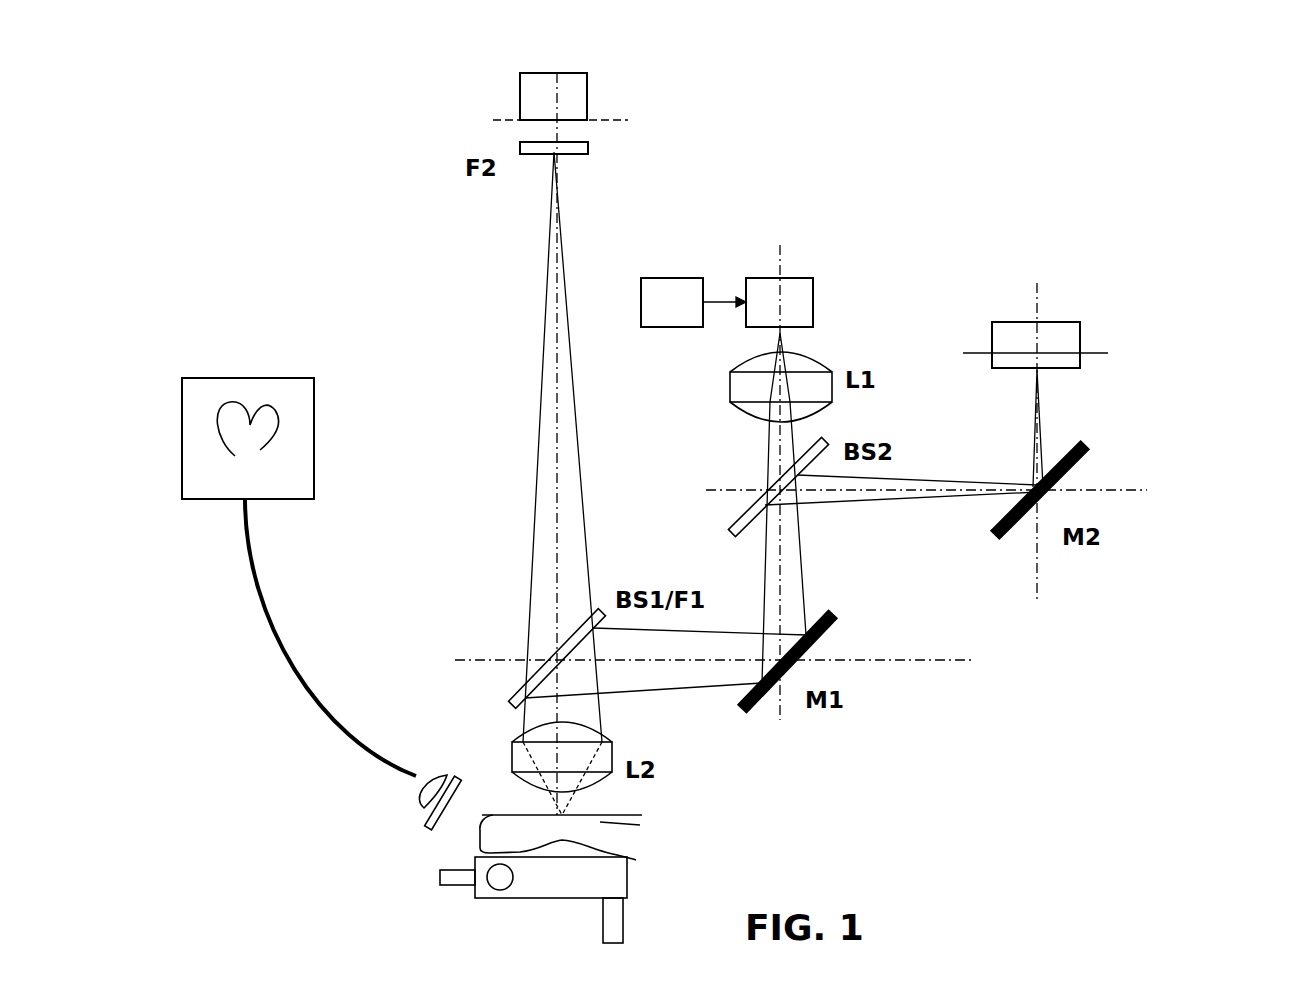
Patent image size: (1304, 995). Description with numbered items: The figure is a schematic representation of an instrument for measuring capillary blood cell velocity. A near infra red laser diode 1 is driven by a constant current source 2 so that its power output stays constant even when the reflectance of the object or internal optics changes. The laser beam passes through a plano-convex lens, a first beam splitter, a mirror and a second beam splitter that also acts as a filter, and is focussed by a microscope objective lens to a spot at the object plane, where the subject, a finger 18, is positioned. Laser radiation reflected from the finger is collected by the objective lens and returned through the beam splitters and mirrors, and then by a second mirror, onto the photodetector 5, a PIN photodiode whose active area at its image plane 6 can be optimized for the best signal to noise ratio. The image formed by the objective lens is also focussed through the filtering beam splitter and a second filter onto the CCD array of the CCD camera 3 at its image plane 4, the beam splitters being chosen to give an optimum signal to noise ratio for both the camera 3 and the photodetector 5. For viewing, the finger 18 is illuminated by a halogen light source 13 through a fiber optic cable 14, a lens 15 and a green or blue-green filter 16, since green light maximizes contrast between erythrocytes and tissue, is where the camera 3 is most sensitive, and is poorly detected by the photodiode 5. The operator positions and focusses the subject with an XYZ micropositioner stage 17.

The laser diode 1 is at (797, 279).
The constant current source 2 is at (670, 279).
The CCD camera 3 is at (520, 90).
The image plane 4 is at (608, 118).
The photodetector 5 is at (1015, 323).
The image plane 6 is at (1010, 352).
The halogen light source 13 is at (248, 416).
The fiber optic cable 14 is at (325, 637).
The lens 15 is at (414, 809).
The filter 16 is at (436, 821).
The XYZ micropositioner stage 17 is at (533, 900).
The finger 18 is at (570, 830).